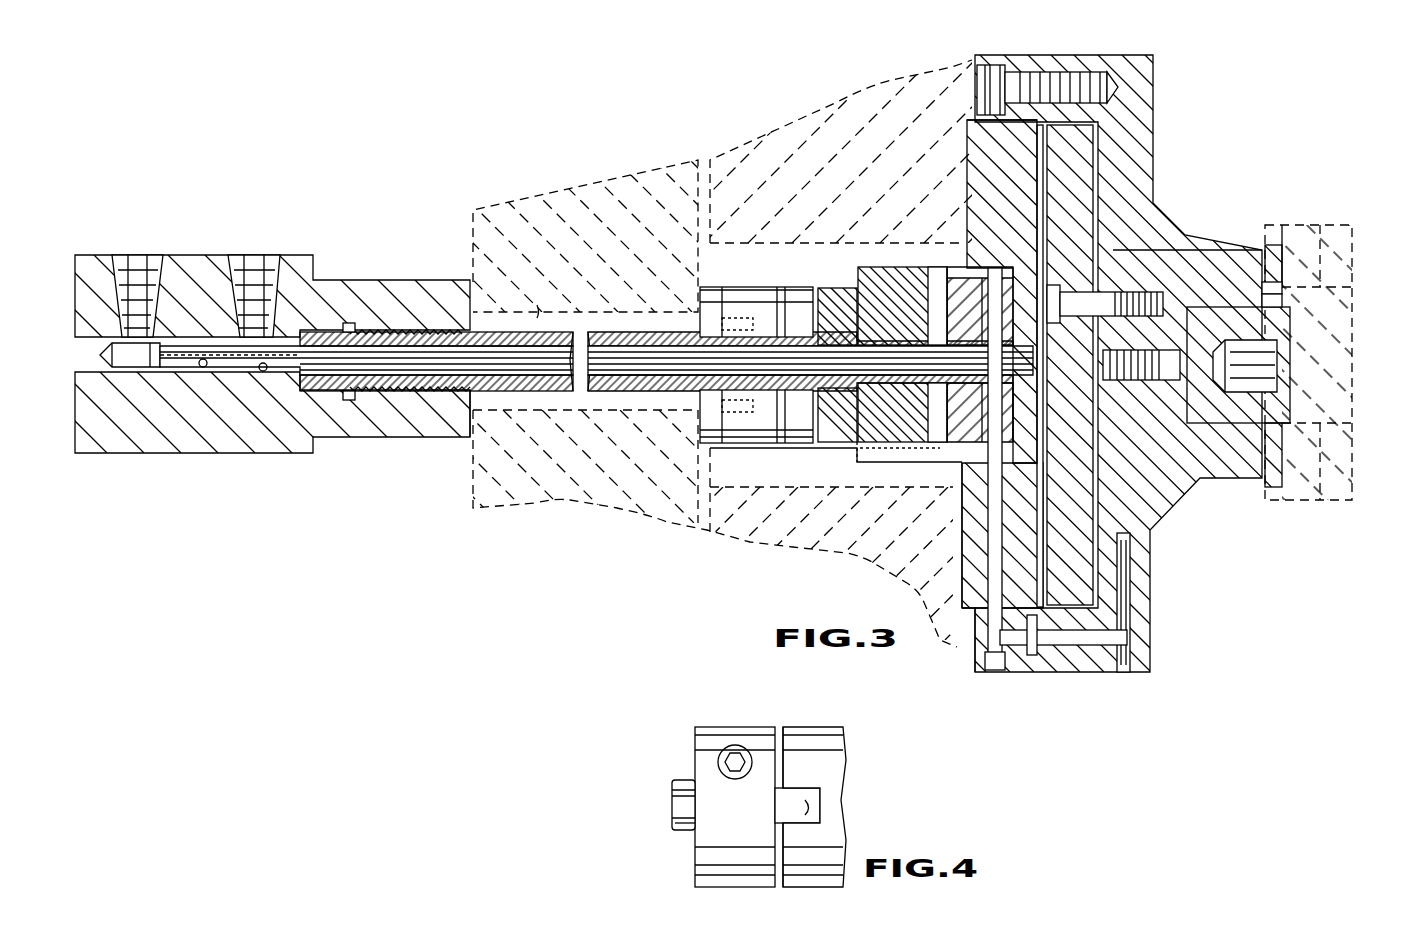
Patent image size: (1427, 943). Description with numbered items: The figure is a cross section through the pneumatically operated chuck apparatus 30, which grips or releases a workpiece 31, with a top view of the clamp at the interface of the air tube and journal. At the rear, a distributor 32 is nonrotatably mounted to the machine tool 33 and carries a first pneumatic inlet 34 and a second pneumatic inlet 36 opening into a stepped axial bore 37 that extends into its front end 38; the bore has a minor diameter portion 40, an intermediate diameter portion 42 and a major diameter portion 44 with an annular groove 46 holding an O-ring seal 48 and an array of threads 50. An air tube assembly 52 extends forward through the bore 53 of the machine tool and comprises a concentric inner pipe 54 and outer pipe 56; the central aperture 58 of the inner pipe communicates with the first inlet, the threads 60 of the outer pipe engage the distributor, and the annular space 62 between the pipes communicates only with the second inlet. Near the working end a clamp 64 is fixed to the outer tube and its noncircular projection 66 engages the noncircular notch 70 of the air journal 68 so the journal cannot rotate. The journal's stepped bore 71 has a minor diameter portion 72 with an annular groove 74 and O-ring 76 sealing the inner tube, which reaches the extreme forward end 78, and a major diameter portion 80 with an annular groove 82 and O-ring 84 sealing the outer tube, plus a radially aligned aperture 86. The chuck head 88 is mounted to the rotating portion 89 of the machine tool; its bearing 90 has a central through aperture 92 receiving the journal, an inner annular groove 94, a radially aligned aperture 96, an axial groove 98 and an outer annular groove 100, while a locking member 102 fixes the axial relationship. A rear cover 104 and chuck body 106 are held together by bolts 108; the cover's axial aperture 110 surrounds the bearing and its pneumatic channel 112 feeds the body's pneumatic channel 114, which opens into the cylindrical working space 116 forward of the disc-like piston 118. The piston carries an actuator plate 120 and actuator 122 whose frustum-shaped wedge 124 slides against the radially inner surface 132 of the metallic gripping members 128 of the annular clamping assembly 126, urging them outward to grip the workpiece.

In FIG. 3, the chuck apparatus 30 is at (480, 172).
In FIG. 3, the workpiece 31 is at (1352, 478).
In FIG. 3, the distributor 32 is at (130, 460).
In FIG. 3, the machine tool 33 is at (533, 508).
In FIG. 3, the first pneumatic inlet 34 is at (148, 268).
In FIG. 3, the second pneumatic inlet 36 is at (258, 268).
In FIG. 3, the stepped axial bore 37 is at (263, 370).
In FIG. 3, the front end 38 is at (470, 445).
In FIG. 3, the minor diameter portion 40 is at (203, 367).
In FIG. 3, the intermediate diameter portion 42 is at (300, 372).
In FIG. 3, the major diameter portion 44 is at (442, 386).
In FIG. 3, the annular groove 46 is at (358, 392).
In FIG. 3, the O-ring seal 48 is at (347, 323).
In FIG. 3, the threads 50 is at (396, 330).
In FIG. 3, the air tube assembly 52 is at (563, 328).
In FIG. 4, the air tube assembly 52 is at (665, 783).
In FIG. 3, the bore 53 is at (538, 305).
In FIG. 3, the inner pipe 54 is at (612, 380).
In FIG. 3, the outer pipe 56 is at (623, 393).
In FIG. 4, the outer pipe 56 is at (680, 830).
In FIG. 3, the central aperture 58 is at (158, 345).
In FIG. 3, the threads 60 is at (447, 330).
In FIG. 3, the annular space 62 is at (545, 395).
In FIG. 3, the clamp 64 is at (690, 298).
In FIG. 4, the clamp 64 is at (690, 756).
In FIG. 3, the noncircular projection 66 is at (793, 297).
In FIG. 4, the noncircular projection 66 is at (795, 800).
In FIG. 3, the air journal 68 is at (838, 282).
In FIG. 4, the air journal 68 is at (852, 745).
In FIG. 3, the noncircular notch 70 is at (815, 292).
In FIG. 4, the noncircular notch 70 is at (812, 808).
In FIG. 3, the stepped axially aligned bore 71 is at (800, 398).
In FIG. 3, the minor diameter portion 72 is at (988, 330).
In FIG. 3, the annular groove 74 is at (1000, 320).
In FIG. 3, the O-ring 76 is at (1020, 300).
In FIG. 3, the extreme forward end 78 is at (976, 268).
In FIG. 3, the major diameter portion 80 is at (893, 322).
In FIG. 3, the annular groove 82 is at (863, 333).
In FIG. 3, the O-ring 84 is at (853, 325).
In FIG. 3, the radially aligned aperture 86 is at (900, 432).
In FIG. 3, the chuck head 88 is at (1212, 93).
In FIG. 3, the rotating portion 89 is at (893, 85).
In FIG. 3, the bearing 90 is at (862, 447).
In FIG. 3, the central through aperture 92 is at (912, 443).
In FIG. 3, the inner annular groove 94 is at (946, 443).
In FIG. 3, the radially aligned aperture 96 is at (960, 456).
In FIG. 3, the axial groove 98 is at (968, 472).
In FIG. 3, the outer annular groove 100 is at (978, 487).
In FIG. 3, the locking member 102 is at (990, 505).
In FIG. 3, the rear cover 104 is at (1019, 676).
In FIG. 3, the chuck body 106 is at (1154, 678).
In FIG. 3, the bolts 108 is at (995, 72).
In FIG. 3, the axial aperture 110 is at (885, 463).
In FIG. 3, the pneumatic channel 112 is at (992, 628).
In FIG. 3, the pneumatic channel 114 is at (1130, 583).
In FIG. 3, the cylindrical working space 116 is at (1090, 500).
In FIG. 3, the piston 118 is at (1073, 193).
In FIG. 3, the actuator plate 120 is at (1170, 310).
In FIG. 3, the actuator 122 is at (1290, 295).
In FIG. 3, the wedge 124 is at (1293, 275).
In FIG. 3, the clamping assembly 126 is at (1293, 252).
In FIG. 3, the gripping members 128 is at (1270, 245).
In FIG. 3, the radially inner surface 132 is at (1282, 440).